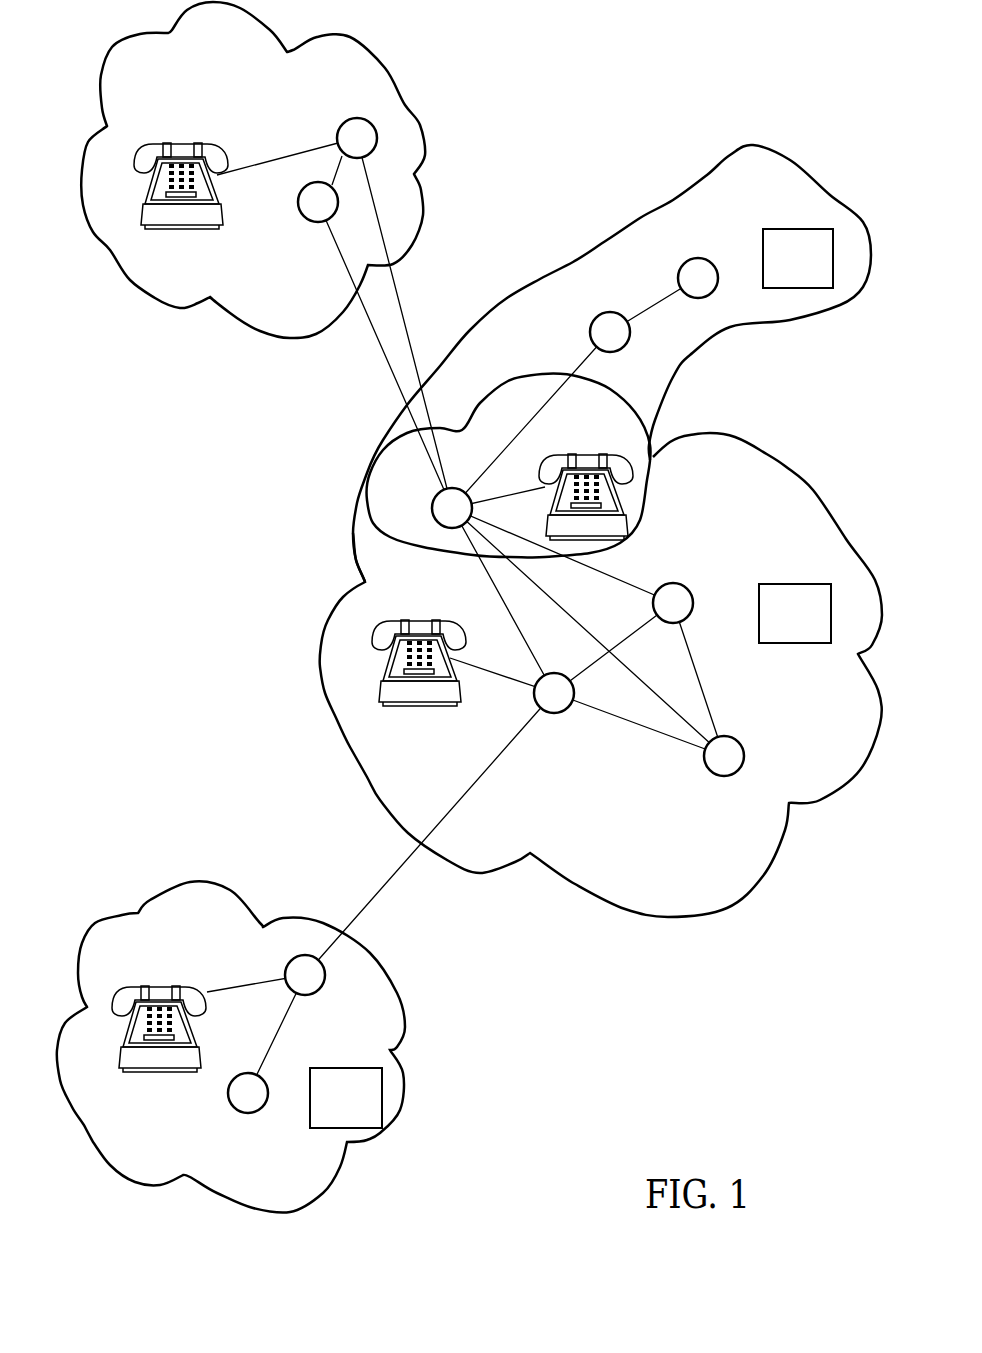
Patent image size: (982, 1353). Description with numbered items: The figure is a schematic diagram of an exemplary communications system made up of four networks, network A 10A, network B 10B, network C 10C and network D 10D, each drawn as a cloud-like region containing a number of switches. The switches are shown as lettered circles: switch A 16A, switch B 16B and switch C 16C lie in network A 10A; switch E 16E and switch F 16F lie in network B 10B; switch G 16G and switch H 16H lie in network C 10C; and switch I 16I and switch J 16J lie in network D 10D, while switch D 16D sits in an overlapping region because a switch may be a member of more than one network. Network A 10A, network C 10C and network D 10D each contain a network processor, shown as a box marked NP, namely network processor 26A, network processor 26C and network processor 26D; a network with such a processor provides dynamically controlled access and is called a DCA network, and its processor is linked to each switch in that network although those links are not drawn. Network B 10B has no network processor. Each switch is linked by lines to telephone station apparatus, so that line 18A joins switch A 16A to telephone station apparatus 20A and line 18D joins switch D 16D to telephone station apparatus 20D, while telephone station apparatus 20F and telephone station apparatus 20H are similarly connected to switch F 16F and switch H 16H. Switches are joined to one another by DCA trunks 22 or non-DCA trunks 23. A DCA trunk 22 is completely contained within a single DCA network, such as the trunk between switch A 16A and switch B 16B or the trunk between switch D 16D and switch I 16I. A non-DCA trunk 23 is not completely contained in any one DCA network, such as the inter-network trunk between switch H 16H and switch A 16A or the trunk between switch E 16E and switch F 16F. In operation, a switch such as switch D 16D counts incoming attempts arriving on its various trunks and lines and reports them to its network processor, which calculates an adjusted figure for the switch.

The network A 10A is at (658, 918).
The network B 10B is at (115, 45).
The network C 10C is at (367, 1143).
The network D 10D is at (810, 162).
The switch A 16A is at (556, 714).
The switch B 16B is at (688, 583).
The switch C 16C is at (724, 777).
The switch D 16D is at (433, 506).
The switch E 16E is at (298, 203).
The switch F 16F is at (345, 118).
The switch G 16G is at (228, 1094).
The switch H 16H is at (285, 965).
The switch I 16I is at (615, 312).
The switch J 16J is at (713, 258).
The line 18A is at (473, 667).
The line 18D is at (506, 489).
The telephone station apparatus 20A is at (410, 706).
The telephone station apparatus 20D is at (572, 447).
The telephone station apparatus 20F is at (175, 137).
The telephone station apparatus 20H is at (158, 982).
The DCA trunk 22 is at (578, 367).
The non-DCA trunk 23 is at (280, 157).
The network processor 26A is at (790, 583).
The network processor 26C is at (358, 1068).
The network processor 26D is at (803, 229).